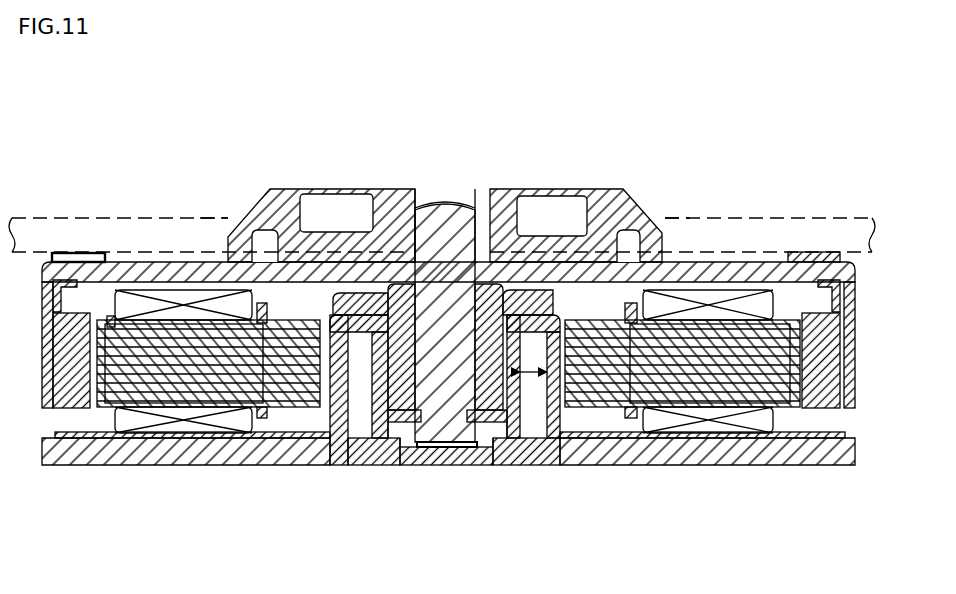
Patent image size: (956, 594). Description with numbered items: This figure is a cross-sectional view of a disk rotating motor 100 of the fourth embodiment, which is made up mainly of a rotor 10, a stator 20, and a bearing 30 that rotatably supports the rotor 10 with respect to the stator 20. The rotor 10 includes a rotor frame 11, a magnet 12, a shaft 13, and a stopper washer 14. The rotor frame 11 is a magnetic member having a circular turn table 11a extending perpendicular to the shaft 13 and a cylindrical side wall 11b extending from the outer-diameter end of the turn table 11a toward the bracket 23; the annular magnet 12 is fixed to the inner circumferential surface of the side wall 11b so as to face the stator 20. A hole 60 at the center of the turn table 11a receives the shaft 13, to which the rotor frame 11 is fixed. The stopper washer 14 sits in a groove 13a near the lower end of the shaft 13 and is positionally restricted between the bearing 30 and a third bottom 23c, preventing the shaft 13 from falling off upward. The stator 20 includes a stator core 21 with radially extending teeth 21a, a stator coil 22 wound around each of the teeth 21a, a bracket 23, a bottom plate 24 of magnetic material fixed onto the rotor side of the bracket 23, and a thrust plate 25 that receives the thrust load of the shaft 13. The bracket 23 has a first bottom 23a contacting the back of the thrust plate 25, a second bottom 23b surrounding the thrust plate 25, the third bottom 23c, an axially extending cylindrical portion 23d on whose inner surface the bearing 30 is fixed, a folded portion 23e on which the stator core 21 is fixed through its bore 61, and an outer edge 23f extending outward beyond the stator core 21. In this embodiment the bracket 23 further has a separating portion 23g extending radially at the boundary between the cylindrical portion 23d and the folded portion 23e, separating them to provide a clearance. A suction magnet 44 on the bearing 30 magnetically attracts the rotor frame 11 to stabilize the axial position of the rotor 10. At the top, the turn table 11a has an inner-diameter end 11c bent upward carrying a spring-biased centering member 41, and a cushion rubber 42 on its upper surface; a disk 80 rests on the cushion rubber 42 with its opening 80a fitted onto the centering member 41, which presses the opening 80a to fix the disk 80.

The motor 100 is at (669, 111).
The rotor 10 is at (717, 270).
The rotor frame 11 is at (180, 186).
The turn table 11a is at (120, 278).
The side wall 11b is at (43, 300).
The inner-diameter end 11c is at (230, 238).
The magnet 12 is at (813, 407).
The shaft 13 is at (448, 238).
The groove 13a is at (498, 425).
The stopper washer 14 is at (505, 423).
The stator 20 is at (587, 420).
The stator core 21 is at (662, 395).
The teeth 21a is at (448, 365).
The stator coil 22 is at (723, 427).
The bracket 23 is at (773, 437).
The first bottom 23a is at (457, 458).
The second bottom 23b is at (407, 448).
The third bottom 23c is at (387, 435).
The cylindrical portion 23d is at (360, 322).
The folded portion 23e is at (267, 405).
The outer edge 23f is at (195, 440).
The separating portion 23g is at (310, 400).
The bottom plate 24 is at (95, 437).
The thrust plate 25 is at (478, 430).
The bearing 30 is at (493, 297).
The centering member 41 is at (617, 213).
The cushion rubber 42 is at (810, 253).
The suction magnet 44 is at (527, 303).
The hole 60 is at (428, 212).
The bore 61 is at (557, 320).
The disk 80 is at (763, 218).
The opening 80a is at (662, 218).